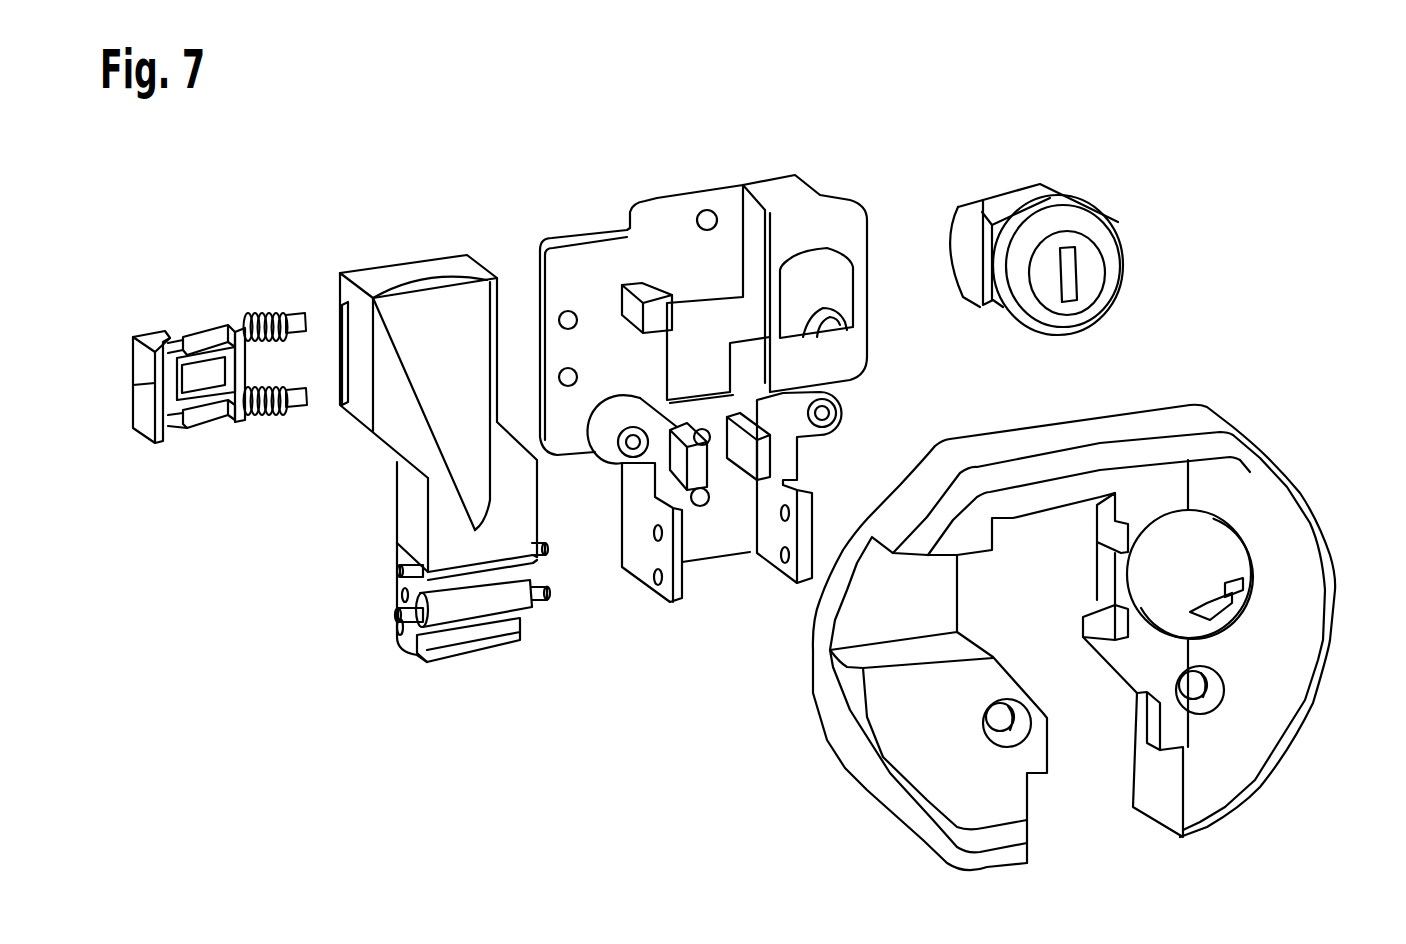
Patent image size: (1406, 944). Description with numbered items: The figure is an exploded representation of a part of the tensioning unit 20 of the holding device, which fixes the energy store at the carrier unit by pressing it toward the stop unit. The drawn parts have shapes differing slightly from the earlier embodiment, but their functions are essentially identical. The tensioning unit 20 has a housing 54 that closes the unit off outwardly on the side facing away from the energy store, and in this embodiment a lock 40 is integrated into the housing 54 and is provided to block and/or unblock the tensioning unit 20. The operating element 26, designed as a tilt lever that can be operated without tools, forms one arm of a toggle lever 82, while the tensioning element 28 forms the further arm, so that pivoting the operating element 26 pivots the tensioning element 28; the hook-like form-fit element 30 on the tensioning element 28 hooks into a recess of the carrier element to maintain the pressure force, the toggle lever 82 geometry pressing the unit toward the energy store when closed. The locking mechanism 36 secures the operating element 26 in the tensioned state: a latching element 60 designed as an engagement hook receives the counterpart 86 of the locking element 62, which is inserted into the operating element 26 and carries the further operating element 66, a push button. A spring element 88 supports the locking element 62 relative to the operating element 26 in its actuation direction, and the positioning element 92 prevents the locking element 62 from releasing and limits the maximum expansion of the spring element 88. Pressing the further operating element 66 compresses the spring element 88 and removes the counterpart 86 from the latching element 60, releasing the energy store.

The tensioning unit 20 is at (677, 344).
The operating element 26 is at (378, 322).
The tensioning element 28 is at (482, 637).
The form-fit element 30 is at (434, 647).
The locking mechanism 36 is at (185, 357).
The lock 40 is at (1124, 268).
The housing 54 is at (1313, 607).
The latching element 60 is at (657, 313).
The locking element 62 is at (240, 417).
The further operating element 66 is at (147, 412).
The toggle lever 82 is at (416, 470).
The counterpart 86 is at (235, 372).
The spring element 88 is at (282, 315).
The positioning element 92 is at (203, 345).